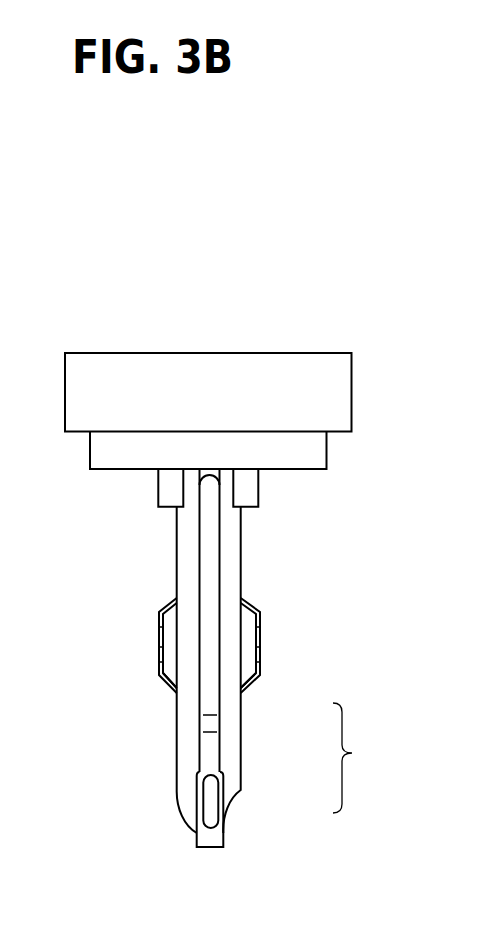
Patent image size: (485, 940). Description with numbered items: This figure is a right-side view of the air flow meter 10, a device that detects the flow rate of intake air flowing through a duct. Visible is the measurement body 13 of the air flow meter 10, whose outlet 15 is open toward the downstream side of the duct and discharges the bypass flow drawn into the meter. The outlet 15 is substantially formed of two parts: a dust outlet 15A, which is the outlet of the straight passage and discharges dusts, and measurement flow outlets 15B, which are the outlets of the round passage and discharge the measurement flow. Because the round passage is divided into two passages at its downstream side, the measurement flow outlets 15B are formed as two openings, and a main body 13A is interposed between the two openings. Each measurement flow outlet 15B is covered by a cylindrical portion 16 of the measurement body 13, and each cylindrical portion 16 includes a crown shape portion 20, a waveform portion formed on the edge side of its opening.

The air flow meter 10 is at (266, 352).
The measurement body 13 is at (177, 557).
The main body 13A is at (210, 543).
The outlet 15 is at (356, 758).
The dust outlet 15A is at (210, 800).
The measurement flow outlets 15B is at (170, 665).
The cylindrical portions 16 is at (150, 609).
The crown shape portion 20 is at (158, 650).